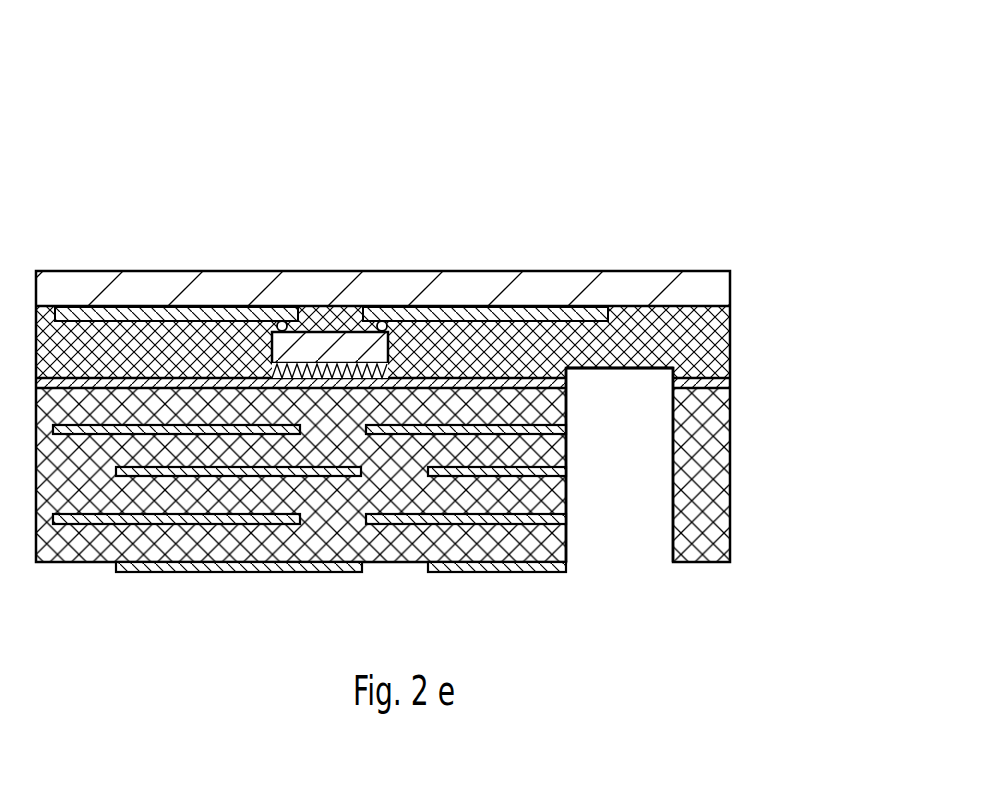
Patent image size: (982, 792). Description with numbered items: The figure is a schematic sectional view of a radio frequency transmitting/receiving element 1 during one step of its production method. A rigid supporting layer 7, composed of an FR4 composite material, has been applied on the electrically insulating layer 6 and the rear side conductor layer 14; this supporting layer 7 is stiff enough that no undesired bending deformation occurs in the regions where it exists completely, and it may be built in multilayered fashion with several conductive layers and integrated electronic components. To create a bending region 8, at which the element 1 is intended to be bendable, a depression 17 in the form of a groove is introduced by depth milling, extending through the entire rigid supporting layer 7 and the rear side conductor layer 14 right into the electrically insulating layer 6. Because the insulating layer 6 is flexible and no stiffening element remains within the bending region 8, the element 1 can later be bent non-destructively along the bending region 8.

The radio frequency transmitting/receiving element 1 is at (760, 196).
The electrically insulating layer 6 is at (730, 333).
The supporting layer 7 is at (713, 478).
The bending region 8 is at (673, 268).
The rear side conductor layer 14 is at (728, 379).
The depression 17 is at (636, 488).